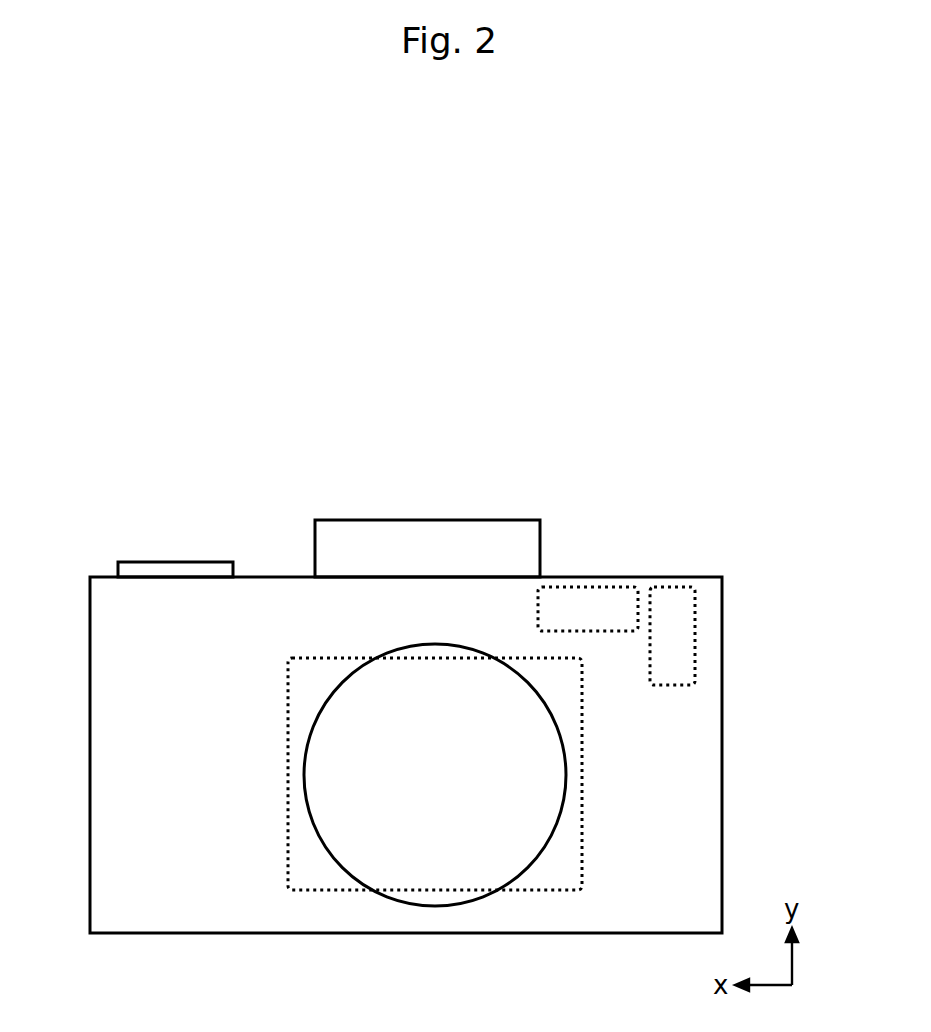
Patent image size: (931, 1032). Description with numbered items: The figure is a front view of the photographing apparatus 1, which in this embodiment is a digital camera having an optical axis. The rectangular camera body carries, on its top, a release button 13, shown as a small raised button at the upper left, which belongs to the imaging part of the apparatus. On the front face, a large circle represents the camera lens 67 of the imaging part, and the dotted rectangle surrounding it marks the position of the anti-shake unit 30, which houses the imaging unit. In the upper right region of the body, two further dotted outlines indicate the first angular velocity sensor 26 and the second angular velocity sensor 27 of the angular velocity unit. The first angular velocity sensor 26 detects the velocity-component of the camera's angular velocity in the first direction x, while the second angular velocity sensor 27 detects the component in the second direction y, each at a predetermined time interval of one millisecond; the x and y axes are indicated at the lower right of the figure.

The photographing apparatus 1 is at (722, 576).
The release button 13 is at (160, 562).
The first angular velocity sensor 26 is at (680, 587).
The second angular velocity sensor 27 is at (608, 587).
The anti-shake unit 30 is at (288, 790).
The camera lens 67 is at (318, 710).